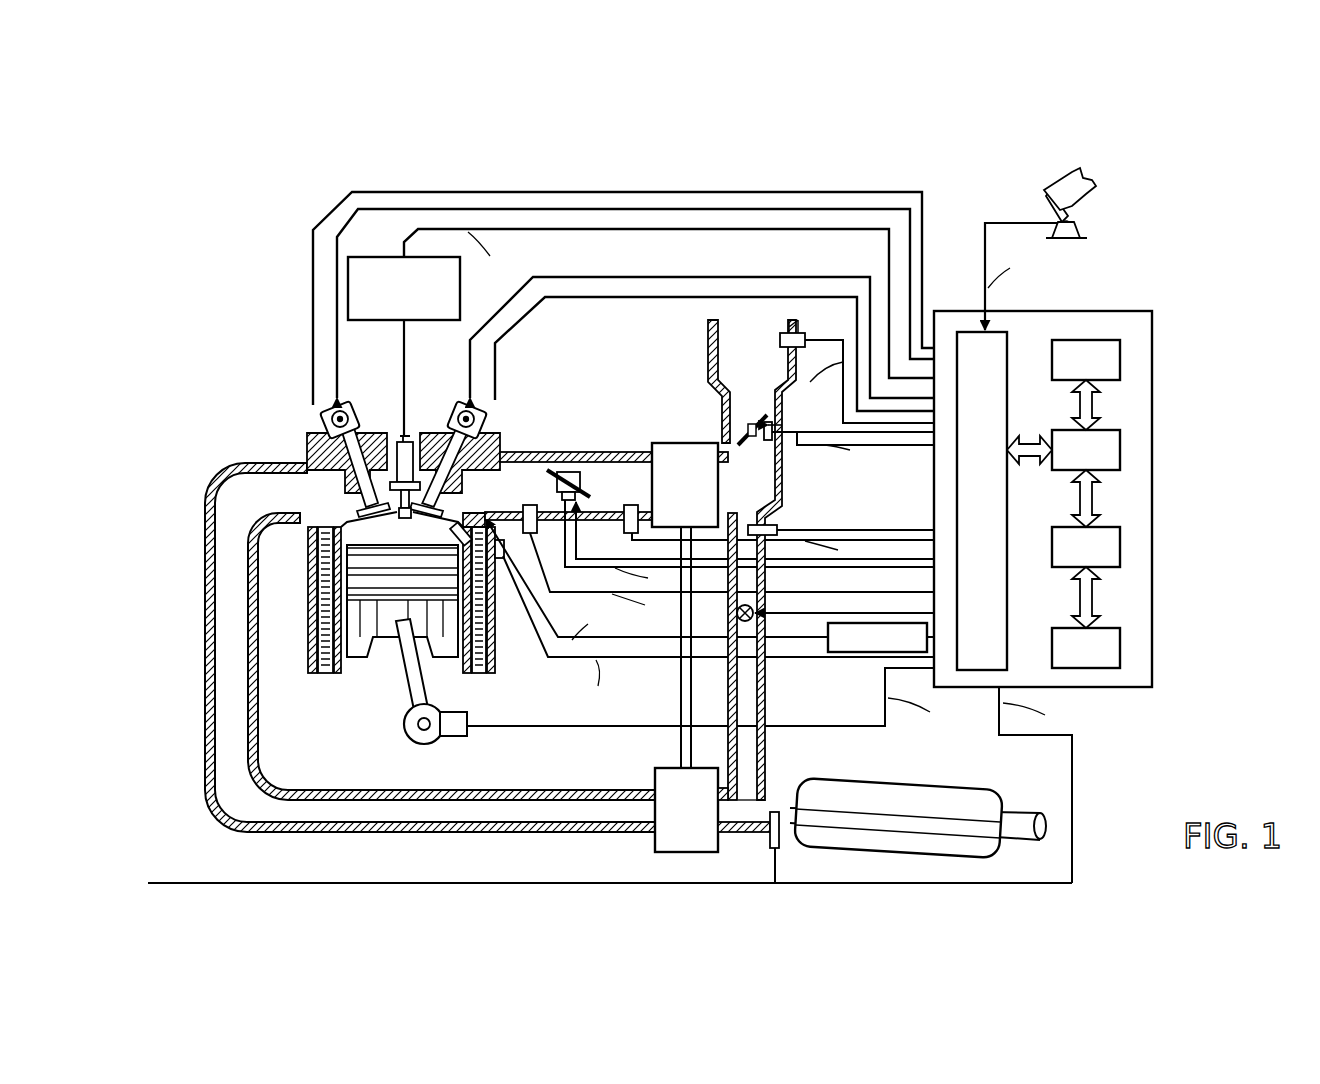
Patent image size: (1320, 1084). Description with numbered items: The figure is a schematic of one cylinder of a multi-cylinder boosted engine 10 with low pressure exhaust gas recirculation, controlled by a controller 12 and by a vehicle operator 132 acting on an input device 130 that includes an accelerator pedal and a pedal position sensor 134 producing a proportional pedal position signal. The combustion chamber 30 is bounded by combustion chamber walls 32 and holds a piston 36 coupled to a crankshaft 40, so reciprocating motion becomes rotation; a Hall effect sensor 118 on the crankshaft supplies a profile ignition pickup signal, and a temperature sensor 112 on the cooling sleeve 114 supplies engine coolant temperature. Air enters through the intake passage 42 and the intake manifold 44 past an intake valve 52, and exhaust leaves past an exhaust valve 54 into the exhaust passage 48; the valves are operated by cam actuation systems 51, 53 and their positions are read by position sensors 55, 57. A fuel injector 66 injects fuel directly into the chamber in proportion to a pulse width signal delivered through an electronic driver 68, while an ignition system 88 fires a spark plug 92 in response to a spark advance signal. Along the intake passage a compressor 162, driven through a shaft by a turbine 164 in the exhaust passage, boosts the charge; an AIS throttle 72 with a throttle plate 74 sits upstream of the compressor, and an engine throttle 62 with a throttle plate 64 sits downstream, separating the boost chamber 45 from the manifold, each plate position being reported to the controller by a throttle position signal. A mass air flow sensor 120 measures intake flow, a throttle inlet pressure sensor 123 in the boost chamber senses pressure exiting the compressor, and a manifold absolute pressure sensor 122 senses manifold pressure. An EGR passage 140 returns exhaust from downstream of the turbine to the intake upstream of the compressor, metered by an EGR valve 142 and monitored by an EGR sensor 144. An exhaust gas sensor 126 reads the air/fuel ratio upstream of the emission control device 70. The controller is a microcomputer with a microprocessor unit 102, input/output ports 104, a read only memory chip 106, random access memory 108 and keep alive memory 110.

The engine 10 is at (243, 386).
The controller 12 is at (1086, 485).
The combustion chamber 30 is at (402, 530).
The combustion chamber walls 32 is at (347, 662).
The piston 36 is at (387, 647).
The crankshaft 40 is at (411, 742).
The intake passage 42 is at (752, 560).
The intake manifold 44 is at (568, 486).
The boost chamber 45 is at (667, 473).
The exhaust passage 48 is at (430, 647).
The cam actuation system 51 is at (458, 402).
The intake valve 52 is at (418, 500).
The cam actuation system 53 is at (344, 402).
The exhaust valve 54 is at (358, 505).
The position sensor 55 is at (482, 432).
The position sensor 57 is at (326, 410).
The engine throttle 62 is at (572, 474).
The throttle plate 64 is at (555, 470).
The fuel injector 66 is at (465, 525).
The electronic driver 68 is at (828, 633).
The emission control device 70 is at (960, 790).
The AIS throttle 72 is at (778, 422).
The throttle plate 74 is at (745, 430).
The ignition system 88 is at (360, 260).
The spark plug 92 is at (400, 468).
The microprocessor unit 102 is at (1122, 452).
The input/output ports 104 is at (1010, 342).
The read only memory chip 106 is at (1122, 358).
The random access memory 108 is at (1122, 548).
The keep alive memory 110 is at (1122, 648).
The temperature sensor 112 is at (510, 560).
The cooling sleeve 114 is at (500, 562).
The Hall effect sensor 118 is at (460, 740).
The mass air flow sensor 120 is at (797, 335).
The manifold absolute pressure sensor 122 is at (535, 535).
The throttle inlet pressure sensor 123 is at (628, 532).
The exhaust gas sensor 126 is at (772, 848).
The input device 130 is at (1048, 207).
The vehicle operator 132 is at (1100, 192).
The pedal position sensor 134 is at (1088, 228).
The EGR passage 140 is at (766, 685).
The EGR valve 142 is at (737, 613).
The EGR sensor 144 is at (780, 528).
The compressor 162 is at (685, 605).
The turbine 164 is at (686, 810).